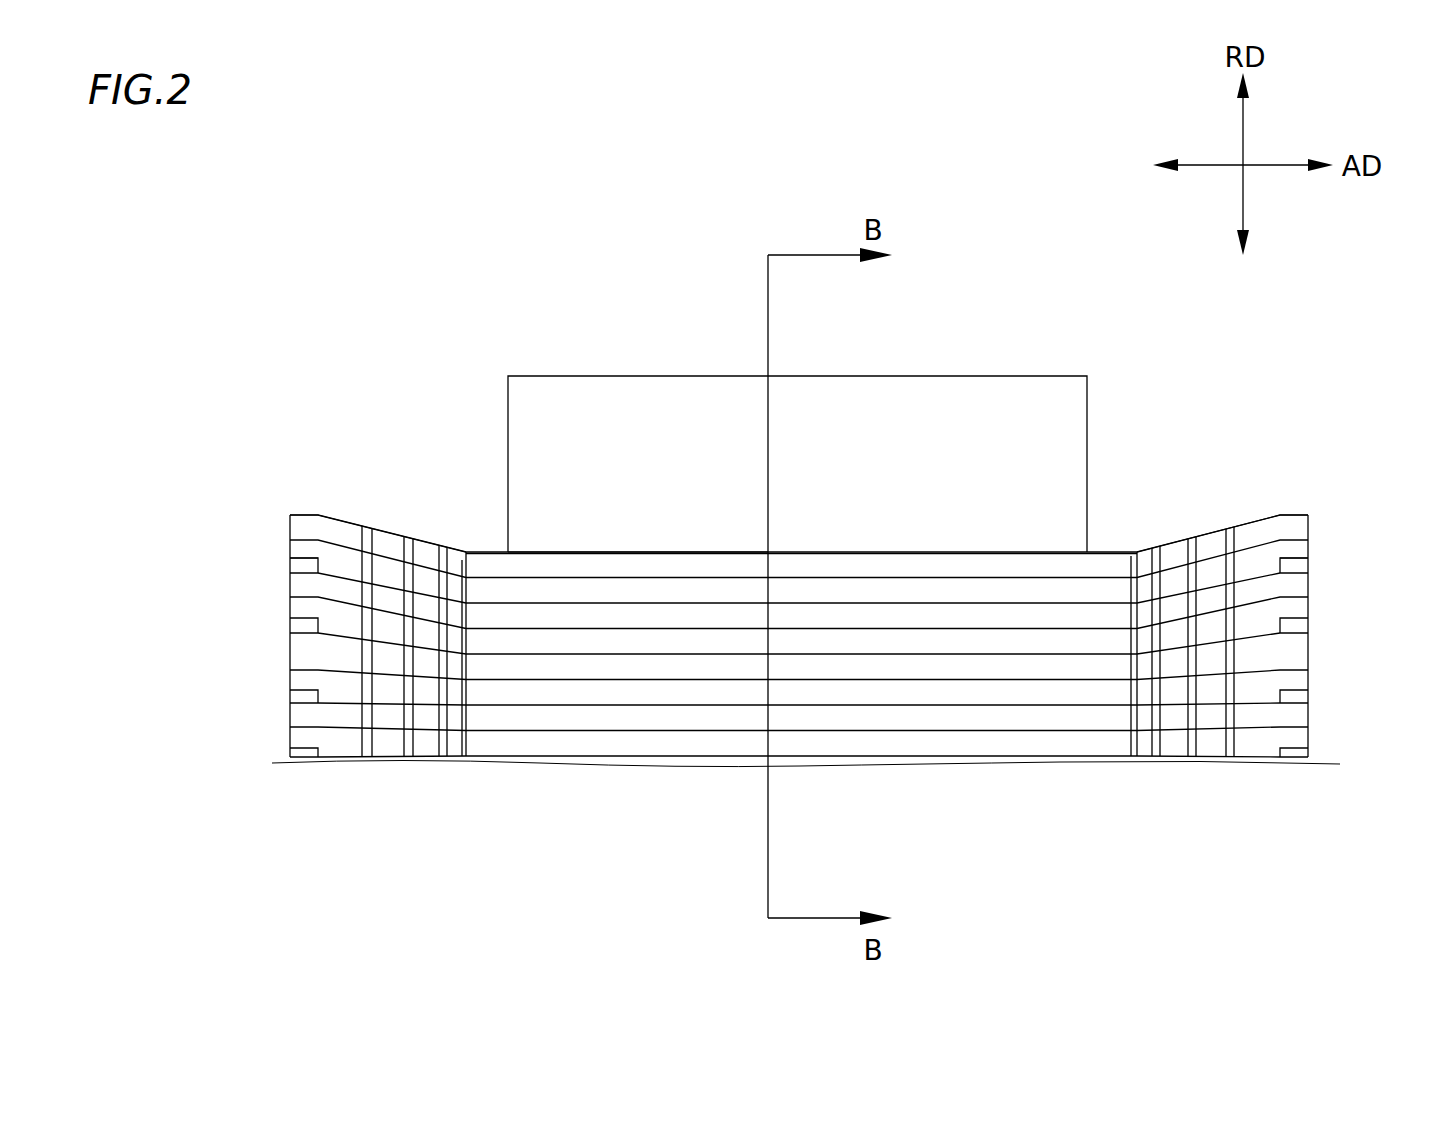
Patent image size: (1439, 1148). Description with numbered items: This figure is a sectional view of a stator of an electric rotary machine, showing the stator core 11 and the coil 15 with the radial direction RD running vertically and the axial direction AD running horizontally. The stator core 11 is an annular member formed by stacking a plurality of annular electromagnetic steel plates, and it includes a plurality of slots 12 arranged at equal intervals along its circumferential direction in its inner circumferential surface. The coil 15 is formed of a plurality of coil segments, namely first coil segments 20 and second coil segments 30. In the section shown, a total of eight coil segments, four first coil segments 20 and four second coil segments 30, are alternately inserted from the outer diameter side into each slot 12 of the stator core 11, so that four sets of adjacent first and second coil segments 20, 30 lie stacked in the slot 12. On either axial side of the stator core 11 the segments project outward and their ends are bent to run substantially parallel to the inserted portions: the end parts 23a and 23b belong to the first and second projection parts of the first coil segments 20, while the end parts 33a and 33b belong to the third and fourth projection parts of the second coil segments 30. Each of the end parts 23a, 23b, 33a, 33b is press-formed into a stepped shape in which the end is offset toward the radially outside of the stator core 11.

The stator core 11 is at (1007, 368).
The slot 12 is at (603, 553).
The coil 15 is at (815, 536).
The first coil segment 20 is at (1158, 645).
The second coil segment 30 is at (435, 645).
The end part of the first projection part 23a is at (1310, 518).
The end part of the second projection part 23b is at (290, 518).
The end part of the third projection part 33a is at (1310, 555).
The end part of the fourth projection part 33b is at (290, 553).